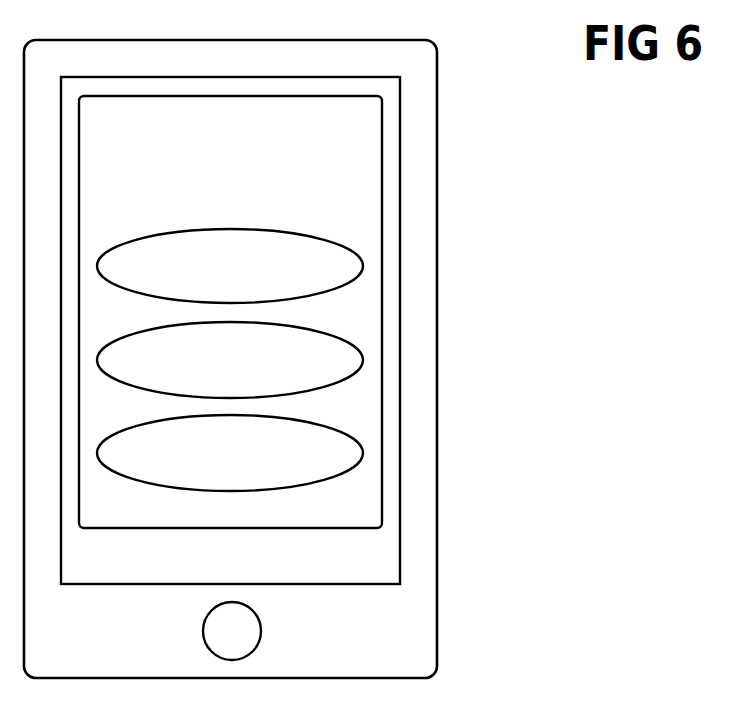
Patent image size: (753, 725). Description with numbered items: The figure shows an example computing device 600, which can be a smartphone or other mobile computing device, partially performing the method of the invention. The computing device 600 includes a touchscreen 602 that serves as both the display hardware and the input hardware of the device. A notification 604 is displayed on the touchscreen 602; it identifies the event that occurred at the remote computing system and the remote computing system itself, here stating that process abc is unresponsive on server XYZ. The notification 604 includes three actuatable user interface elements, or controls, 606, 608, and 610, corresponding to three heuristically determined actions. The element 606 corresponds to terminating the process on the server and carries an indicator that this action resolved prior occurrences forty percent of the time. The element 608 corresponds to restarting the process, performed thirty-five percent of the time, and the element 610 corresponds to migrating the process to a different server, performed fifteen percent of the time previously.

The computing device 600 is at (437, 83).
The touchscreen 602 is at (400, 138).
The notification 604 is at (382, 192).
The actuatable user interface element 606 is at (360, 253).
The actuatable user interface element 608 is at (360, 345).
The actuatable user interface element 610 is at (360, 439).